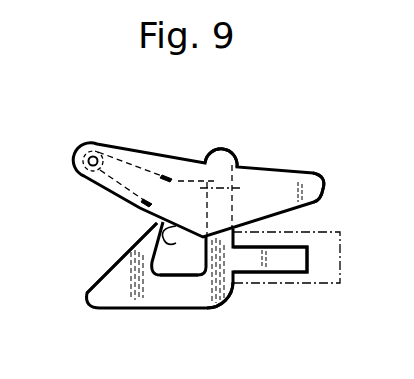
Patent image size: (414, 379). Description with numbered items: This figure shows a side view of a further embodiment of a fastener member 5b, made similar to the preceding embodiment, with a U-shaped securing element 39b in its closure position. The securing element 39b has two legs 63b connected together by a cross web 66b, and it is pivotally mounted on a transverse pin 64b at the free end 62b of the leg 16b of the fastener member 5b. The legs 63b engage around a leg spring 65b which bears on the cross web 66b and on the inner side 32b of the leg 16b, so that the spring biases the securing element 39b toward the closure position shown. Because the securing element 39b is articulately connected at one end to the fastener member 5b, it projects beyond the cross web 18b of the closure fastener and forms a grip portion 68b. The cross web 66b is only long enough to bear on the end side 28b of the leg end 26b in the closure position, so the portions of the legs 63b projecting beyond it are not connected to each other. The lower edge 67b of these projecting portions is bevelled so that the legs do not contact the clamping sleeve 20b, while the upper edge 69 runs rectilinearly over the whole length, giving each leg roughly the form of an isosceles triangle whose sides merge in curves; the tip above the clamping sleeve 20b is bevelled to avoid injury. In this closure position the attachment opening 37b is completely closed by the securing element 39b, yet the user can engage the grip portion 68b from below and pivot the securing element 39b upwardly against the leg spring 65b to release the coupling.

The fastener member 5b is at (152, 309).
The leg 16b is at (190, 159).
The cross web 18b is at (220, 278).
The clamping sleeve 20b is at (337, 285).
The leg end 26b is at (123, 258).
The end side 28b is at (179, 248).
The inner side 32b is at (273, 198).
The attachment opening 37b is at (191, 273).
The securing element 39b is at (326, 188).
The free end 62b is at (136, 150).
The legs 63b is at (258, 182).
The transverse pin 64b is at (78, 168).
The leg spring 65b is at (133, 208).
The cross web 66b is at (103, 191).
The lower edge 67b is at (273, 207).
The grip portion 68b is at (314, 167).
The upper edge 69 is at (207, 158).